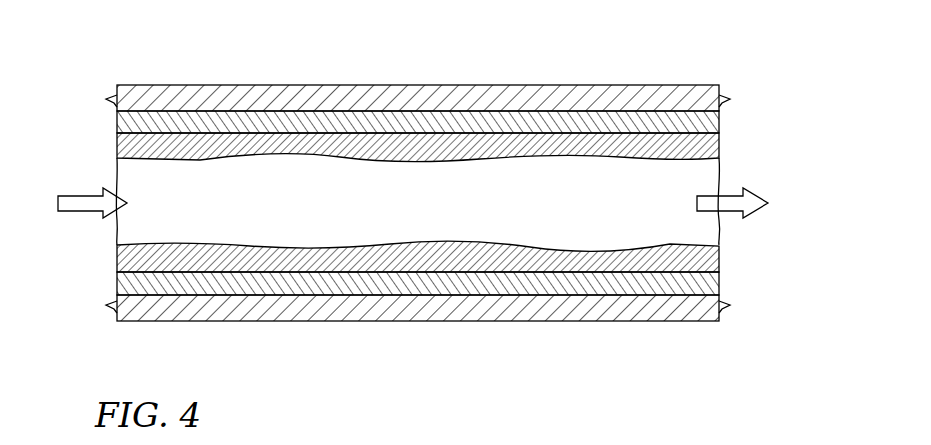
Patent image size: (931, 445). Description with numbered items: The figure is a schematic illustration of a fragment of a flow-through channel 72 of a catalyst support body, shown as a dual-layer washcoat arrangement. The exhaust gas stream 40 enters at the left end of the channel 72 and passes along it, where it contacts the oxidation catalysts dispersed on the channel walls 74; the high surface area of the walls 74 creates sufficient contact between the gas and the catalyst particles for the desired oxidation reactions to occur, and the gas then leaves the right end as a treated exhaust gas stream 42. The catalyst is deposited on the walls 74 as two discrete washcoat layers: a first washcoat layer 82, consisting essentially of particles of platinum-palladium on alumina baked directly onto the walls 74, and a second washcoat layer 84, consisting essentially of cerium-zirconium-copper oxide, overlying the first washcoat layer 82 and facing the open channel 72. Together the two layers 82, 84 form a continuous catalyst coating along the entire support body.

The exhaust gas stream 40 is at (81, 202).
The treated exhaust gas stream 42 is at (722, 201).
The flow-through channel 72 is at (181, 199).
The channel wall 74 is at (188, 113).
The first washcoat layer 82 is at (384, 132).
The second washcoat layer 84 is at (432, 262).